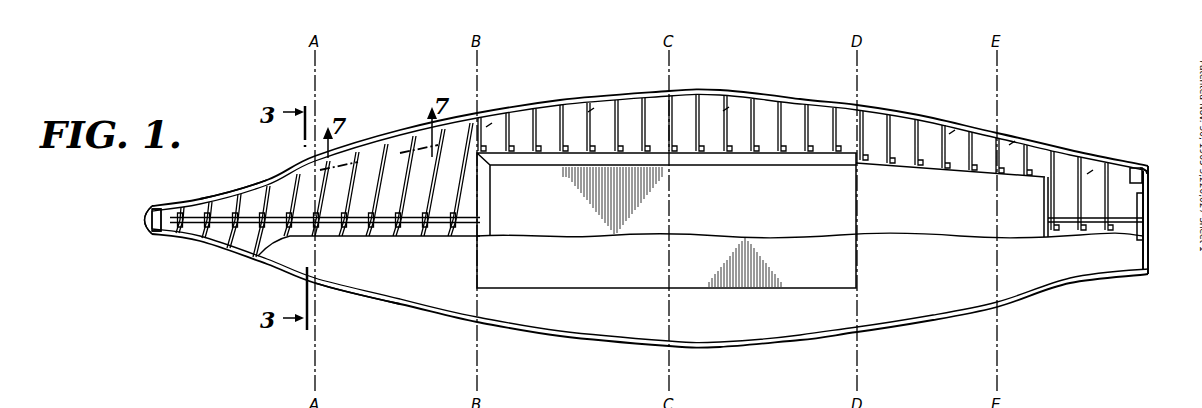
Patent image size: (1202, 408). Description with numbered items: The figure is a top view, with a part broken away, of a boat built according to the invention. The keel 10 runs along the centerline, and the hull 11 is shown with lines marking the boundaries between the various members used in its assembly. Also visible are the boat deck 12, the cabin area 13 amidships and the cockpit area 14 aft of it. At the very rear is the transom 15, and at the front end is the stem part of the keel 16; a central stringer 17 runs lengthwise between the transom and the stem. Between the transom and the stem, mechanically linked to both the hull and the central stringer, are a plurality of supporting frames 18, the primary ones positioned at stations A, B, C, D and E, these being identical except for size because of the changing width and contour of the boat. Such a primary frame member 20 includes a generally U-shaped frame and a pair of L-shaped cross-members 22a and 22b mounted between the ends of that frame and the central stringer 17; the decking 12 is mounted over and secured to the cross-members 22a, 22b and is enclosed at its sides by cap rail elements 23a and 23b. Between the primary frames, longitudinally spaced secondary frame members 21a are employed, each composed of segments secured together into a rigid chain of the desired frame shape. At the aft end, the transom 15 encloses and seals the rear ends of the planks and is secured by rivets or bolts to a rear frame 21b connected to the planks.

The keel 10 is at (655, 248).
The hull 11 is at (597, 352).
The deck 12 is at (720, 330).
The cabin area 13 is at (666, 220).
The cockpit area 14 is at (952, 200).
The transom 15 is at (1150, 213).
The stem part of the keel 16 is at (140, 220).
The central stringer 17 is at (360, 224).
The supporting frames 18 is at (904, 122).
The primary frame member 20 is at (300, 166).
The secondary frame members 21a is at (592, 112).
The rear frame 21b is at (1149, 168).
The L-shaped cross-member 22a is at (374, 147).
The L-shaped cross-member 22b is at (233, 244).
The cap rail element 23a is at (244, 172).
The cap rail element 23b is at (364, 298).